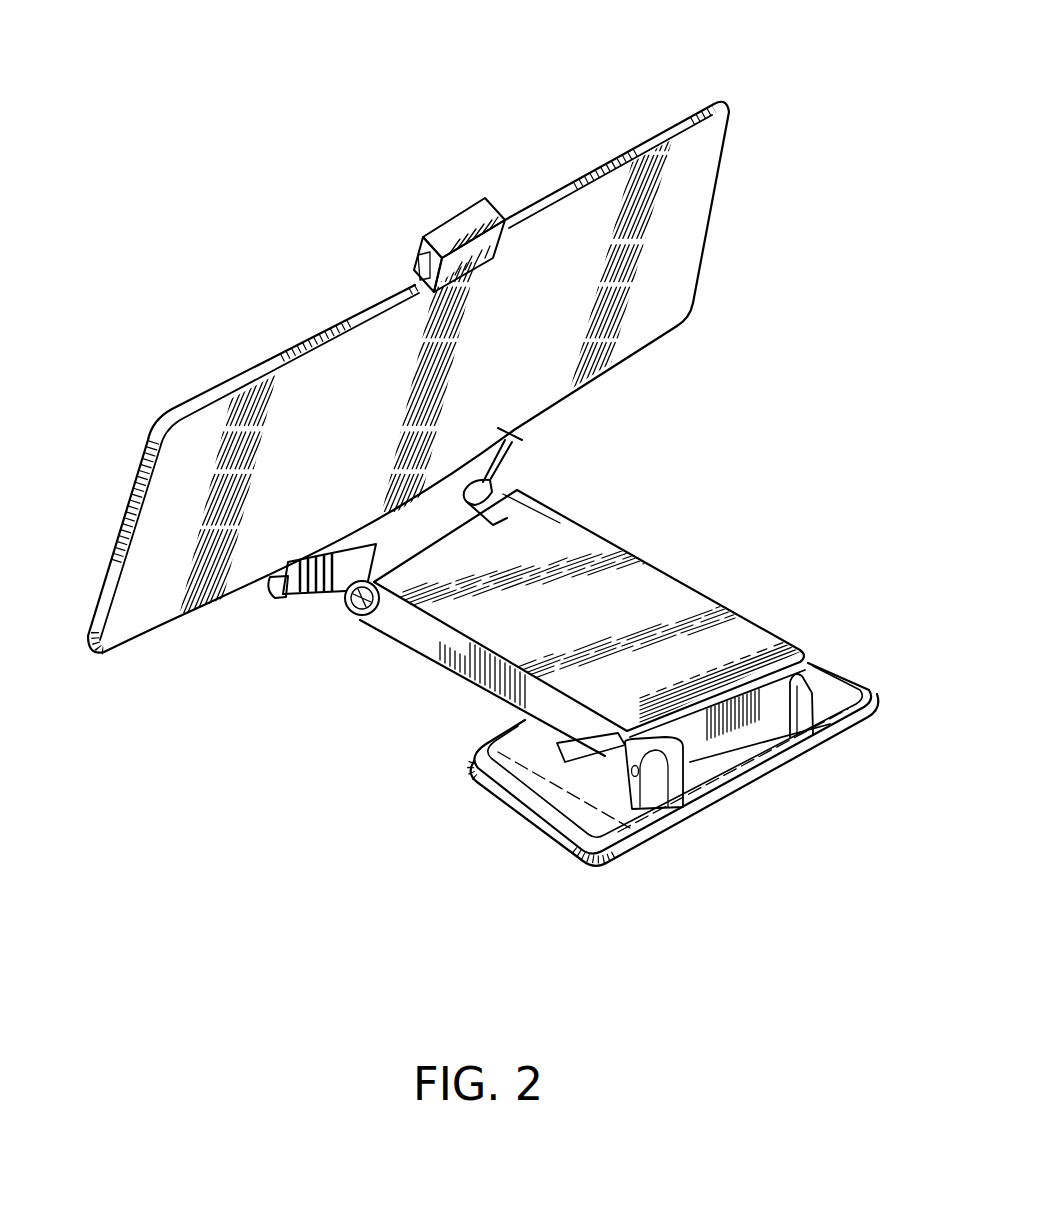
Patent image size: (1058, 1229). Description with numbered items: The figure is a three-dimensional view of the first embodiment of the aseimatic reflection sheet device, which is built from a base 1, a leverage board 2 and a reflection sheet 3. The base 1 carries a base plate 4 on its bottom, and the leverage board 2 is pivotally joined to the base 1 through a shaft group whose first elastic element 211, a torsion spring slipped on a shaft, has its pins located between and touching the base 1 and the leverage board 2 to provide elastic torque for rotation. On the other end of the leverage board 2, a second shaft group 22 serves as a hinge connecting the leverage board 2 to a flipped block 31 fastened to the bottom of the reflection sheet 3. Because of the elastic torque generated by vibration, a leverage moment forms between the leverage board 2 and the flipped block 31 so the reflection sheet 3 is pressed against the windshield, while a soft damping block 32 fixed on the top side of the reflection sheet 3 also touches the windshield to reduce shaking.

The base 1 is at (636, 788).
The leverage board 2 is at (645, 578).
The first elastic element 211 is at (733, 748).
The second shaft group 22 is at (345, 607).
The reflection sheet 3 is at (271, 413).
The flipped block 31 is at (517, 492).
The damping block 32 is at (498, 196).
The base plate 4 is at (530, 773).